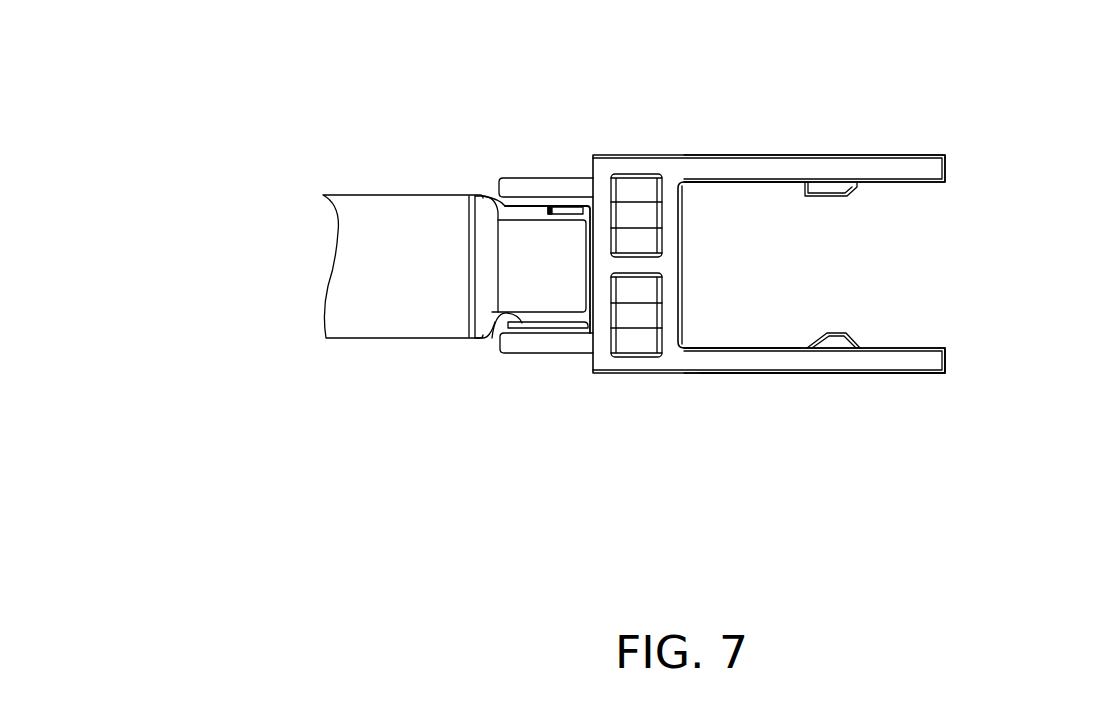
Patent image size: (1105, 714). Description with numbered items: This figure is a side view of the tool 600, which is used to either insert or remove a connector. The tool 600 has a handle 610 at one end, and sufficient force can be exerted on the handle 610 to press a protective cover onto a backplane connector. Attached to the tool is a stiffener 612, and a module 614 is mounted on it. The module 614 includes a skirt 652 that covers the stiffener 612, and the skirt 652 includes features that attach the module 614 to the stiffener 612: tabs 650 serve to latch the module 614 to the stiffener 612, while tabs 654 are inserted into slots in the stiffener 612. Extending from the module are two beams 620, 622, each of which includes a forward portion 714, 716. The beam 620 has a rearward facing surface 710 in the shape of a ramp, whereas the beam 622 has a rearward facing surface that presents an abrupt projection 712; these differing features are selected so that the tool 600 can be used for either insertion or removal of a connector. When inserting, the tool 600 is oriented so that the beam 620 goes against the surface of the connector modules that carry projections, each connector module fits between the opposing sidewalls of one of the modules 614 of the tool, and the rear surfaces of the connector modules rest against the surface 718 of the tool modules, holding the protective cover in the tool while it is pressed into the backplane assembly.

The tool 600 is at (828, 408).
The handle 610 is at (348, 340).
The stiffener 612 is at (491, 336).
The module 614 is at (947, 377).
The beam 620 is at (833, 324).
The beam 622 is at (826, 184).
The tabs 650 is at (487, 197).
The skirt 652 is at (543, 178).
The tabs 654 is at (566, 208).
The rearward facing surface 710 is at (812, 336).
The abrupt projection 712 is at (798, 198).
The forward portion 714 is at (843, 332).
The forward portion 716 is at (850, 198).
The surface 718 is at (680, 218).